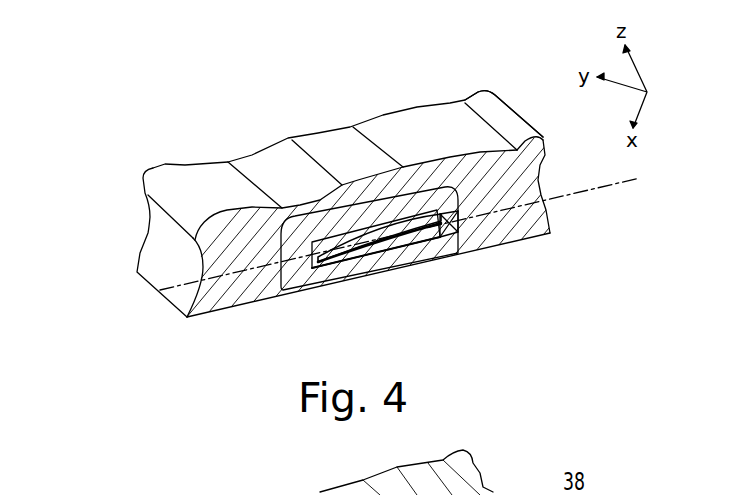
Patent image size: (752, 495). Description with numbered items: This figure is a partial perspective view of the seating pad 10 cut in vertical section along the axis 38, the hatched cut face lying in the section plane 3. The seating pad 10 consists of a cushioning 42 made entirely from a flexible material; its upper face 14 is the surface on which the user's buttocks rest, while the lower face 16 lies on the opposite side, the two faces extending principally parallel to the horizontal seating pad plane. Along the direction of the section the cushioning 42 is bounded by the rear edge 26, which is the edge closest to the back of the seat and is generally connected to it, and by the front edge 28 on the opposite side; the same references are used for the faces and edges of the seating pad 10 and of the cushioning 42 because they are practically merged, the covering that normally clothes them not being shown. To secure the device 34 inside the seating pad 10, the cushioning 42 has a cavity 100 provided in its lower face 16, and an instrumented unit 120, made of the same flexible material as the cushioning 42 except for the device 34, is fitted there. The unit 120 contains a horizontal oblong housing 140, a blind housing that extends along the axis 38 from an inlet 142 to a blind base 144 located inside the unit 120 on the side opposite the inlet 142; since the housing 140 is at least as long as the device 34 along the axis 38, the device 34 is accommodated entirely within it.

The seating pad 10 is at (490, 58).
The upper face 14 is at (330, 152).
The rear edge 26 is at (500, 95).
The section plane 3 is at (547, 153).
The front edge 28 is at (165, 226).
The lower face 16 is at (160, 298).
The cushioning 42 is at (219, 309).
The instrumented unit 120 is at (412, 258).
The cavity 100 is at (283, 291).
The device 34 is at (366, 258).
The blind base 144 is at (318, 258).
The oblong housing 140 is at (454, 232).
The inlet 142 is at (457, 225).
The axis 38 is at (596, 189).